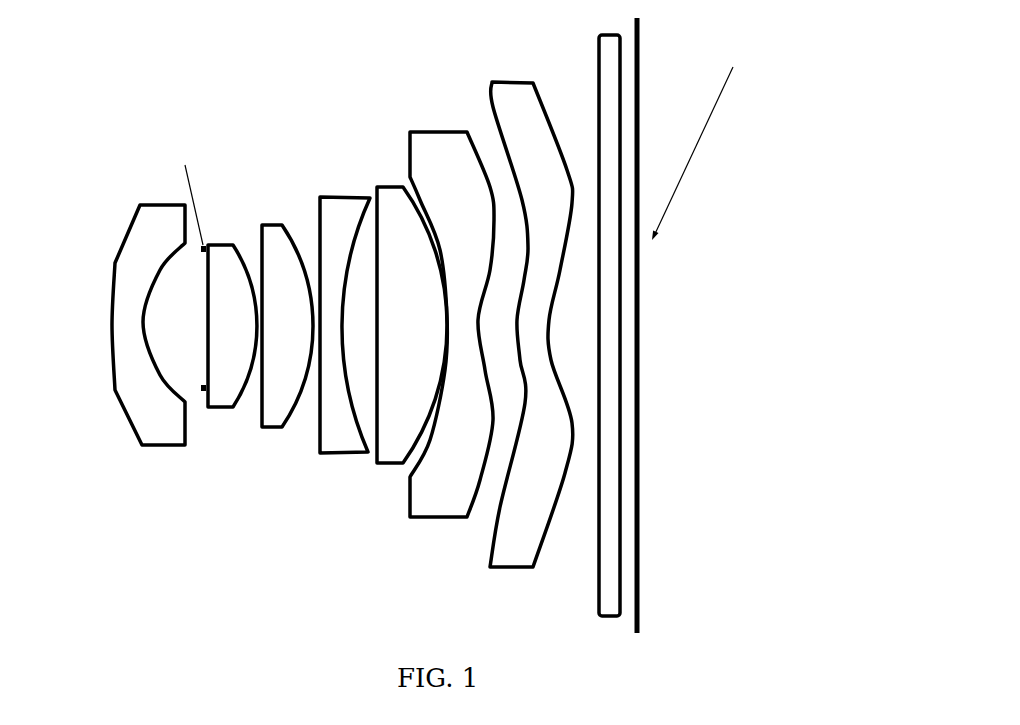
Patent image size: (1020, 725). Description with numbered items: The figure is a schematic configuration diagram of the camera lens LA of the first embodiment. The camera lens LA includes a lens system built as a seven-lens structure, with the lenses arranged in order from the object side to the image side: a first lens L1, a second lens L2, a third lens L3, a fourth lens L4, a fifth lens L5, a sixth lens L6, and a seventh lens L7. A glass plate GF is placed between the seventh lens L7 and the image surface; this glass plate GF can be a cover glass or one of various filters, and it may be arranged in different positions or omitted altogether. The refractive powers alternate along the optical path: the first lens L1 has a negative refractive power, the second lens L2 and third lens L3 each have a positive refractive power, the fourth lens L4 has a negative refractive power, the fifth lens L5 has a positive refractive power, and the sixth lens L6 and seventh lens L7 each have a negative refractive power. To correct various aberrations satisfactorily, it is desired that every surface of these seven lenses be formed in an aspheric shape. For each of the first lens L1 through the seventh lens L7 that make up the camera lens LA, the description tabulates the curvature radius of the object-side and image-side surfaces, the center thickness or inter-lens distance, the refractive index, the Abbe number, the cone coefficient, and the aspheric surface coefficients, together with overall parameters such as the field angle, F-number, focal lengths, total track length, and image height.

The camera lens LA is at (441, 318).
The first lens L1 is at (148, 308).
The second lens L2 is at (232, 308).
The third lens L3 is at (287, 310).
The fourth lens L4 is at (345, 307).
The fifth lens L5 is at (410, 309).
The sixth lens L6 is at (452, 313).
The seventh lens L7 is at (531, 307).
The glass plate GF is at (605, 309).